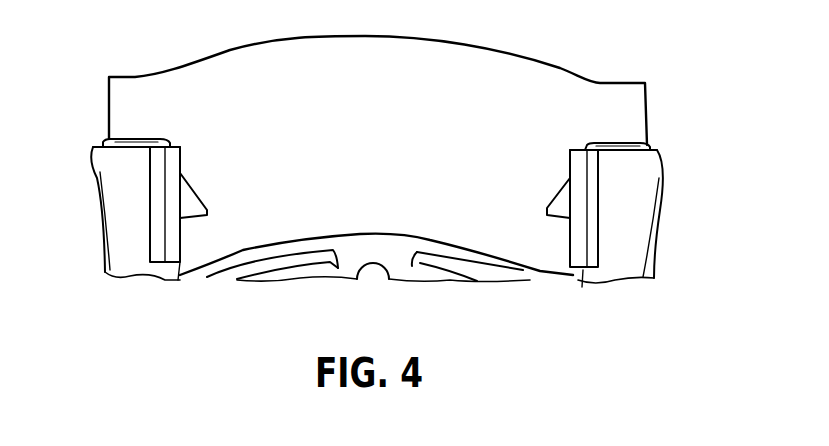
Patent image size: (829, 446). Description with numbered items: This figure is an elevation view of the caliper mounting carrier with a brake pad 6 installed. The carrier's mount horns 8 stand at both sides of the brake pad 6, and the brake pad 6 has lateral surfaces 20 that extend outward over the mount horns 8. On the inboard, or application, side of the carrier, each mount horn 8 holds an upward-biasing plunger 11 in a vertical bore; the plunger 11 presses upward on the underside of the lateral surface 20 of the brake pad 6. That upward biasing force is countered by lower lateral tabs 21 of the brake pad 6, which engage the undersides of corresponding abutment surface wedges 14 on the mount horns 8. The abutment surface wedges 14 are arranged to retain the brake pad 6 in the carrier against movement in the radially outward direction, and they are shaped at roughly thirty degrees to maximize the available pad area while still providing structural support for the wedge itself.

The brake pad 6 is at (600, 86).
The mount horn 8 is at (612, 212).
The upward-biasing plunger 11 is at (610, 152).
The abutment surface wedge 14 is at (543, 275).
The lateral surface 20 is at (648, 161).
The lower lateral tab 21 is at (537, 271).